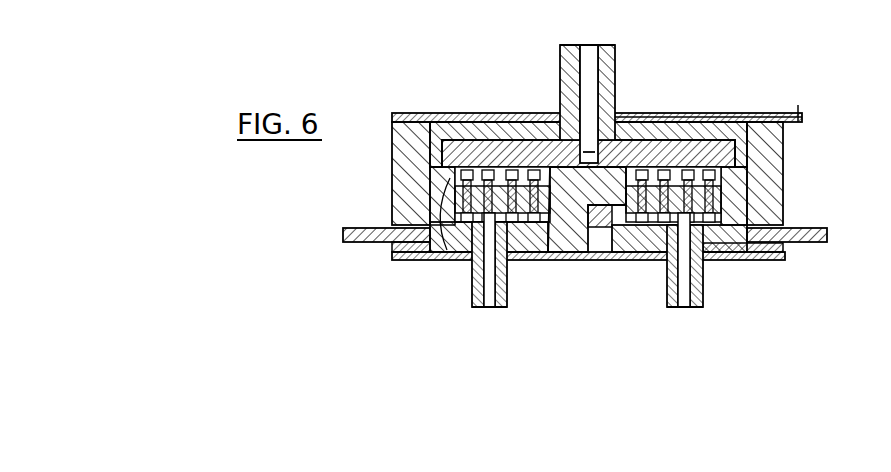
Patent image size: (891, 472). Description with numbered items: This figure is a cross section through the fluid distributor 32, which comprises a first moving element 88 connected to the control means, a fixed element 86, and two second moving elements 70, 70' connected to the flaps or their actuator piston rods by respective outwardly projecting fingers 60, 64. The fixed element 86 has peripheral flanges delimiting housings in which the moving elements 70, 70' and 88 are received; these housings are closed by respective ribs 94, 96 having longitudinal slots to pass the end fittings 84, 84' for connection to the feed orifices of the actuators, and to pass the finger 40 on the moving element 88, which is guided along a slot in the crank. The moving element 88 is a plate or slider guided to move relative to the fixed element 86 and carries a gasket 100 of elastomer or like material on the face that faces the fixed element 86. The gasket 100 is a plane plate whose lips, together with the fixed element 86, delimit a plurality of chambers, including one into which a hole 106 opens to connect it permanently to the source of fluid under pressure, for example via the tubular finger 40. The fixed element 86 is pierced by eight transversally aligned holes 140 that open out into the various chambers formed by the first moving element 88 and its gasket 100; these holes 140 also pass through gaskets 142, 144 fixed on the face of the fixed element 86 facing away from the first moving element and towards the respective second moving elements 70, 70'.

The fluid distributor 32 is at (803, 85).
The tubular finger 40 is at (617, 62).
The outwardly projecting finger 60 is at (360, 243).
The outwardly projecting finger 64 is at (820, 246).
The second moving element 70 is at (489, 266).
The second moving element 70' is at (672, 267).
The end fitting 84 is at (486, 284).
The end fitting 84' is at (679, 284).
The fixed element 86 is at (785, 139).
The first moving element 88 is at (459, 128).
The rib 94 is at (564, 260).
The rib 96 is at (667, 114).
The gasket 100 is at (700, 115).
The hole 106 is at (546, 120).
The holes 140 is at (460, 190).
The gasket 142 is at (447, 222).
The gasket 144 is at (722, 252).